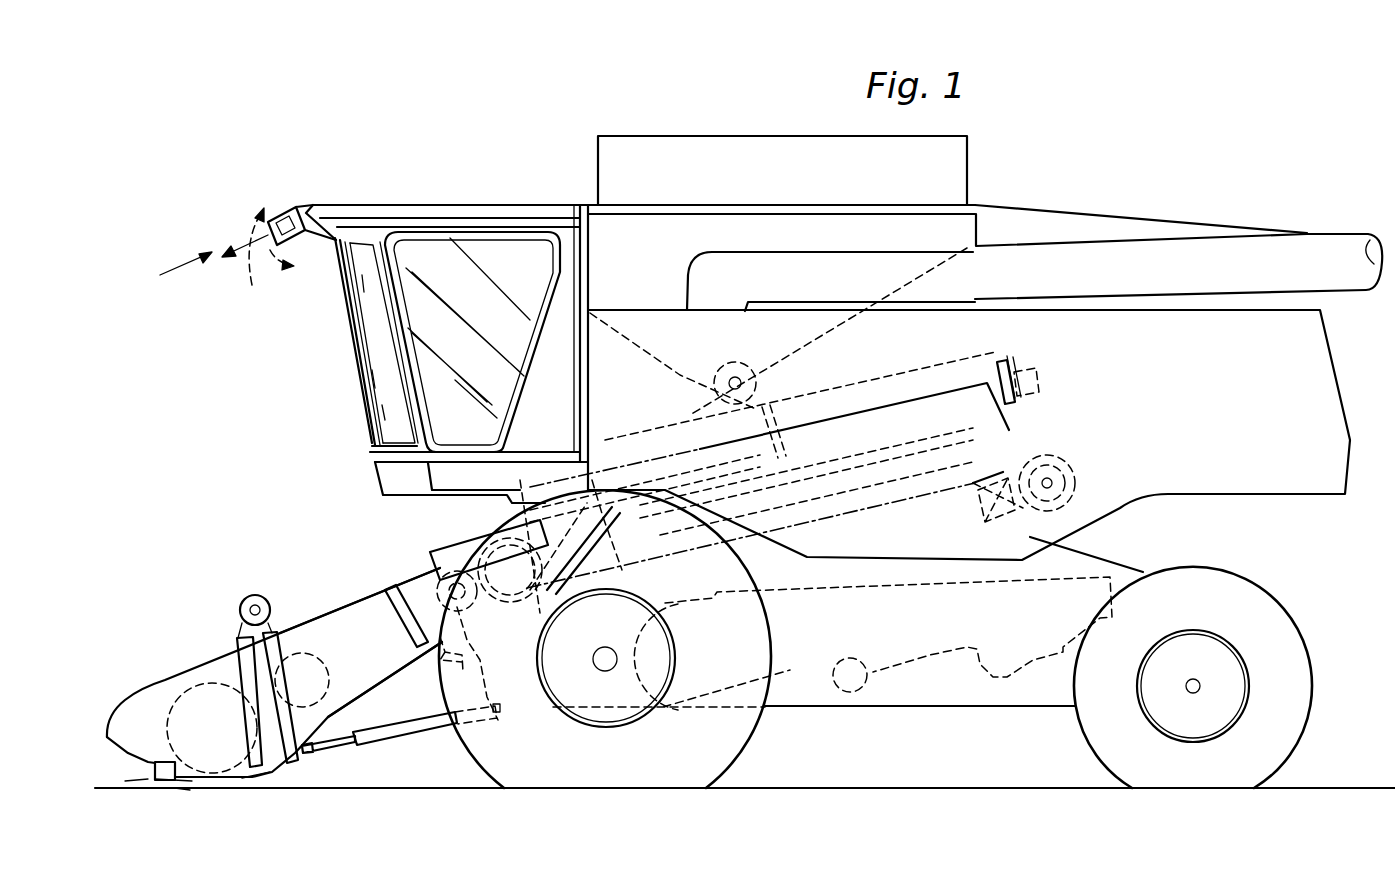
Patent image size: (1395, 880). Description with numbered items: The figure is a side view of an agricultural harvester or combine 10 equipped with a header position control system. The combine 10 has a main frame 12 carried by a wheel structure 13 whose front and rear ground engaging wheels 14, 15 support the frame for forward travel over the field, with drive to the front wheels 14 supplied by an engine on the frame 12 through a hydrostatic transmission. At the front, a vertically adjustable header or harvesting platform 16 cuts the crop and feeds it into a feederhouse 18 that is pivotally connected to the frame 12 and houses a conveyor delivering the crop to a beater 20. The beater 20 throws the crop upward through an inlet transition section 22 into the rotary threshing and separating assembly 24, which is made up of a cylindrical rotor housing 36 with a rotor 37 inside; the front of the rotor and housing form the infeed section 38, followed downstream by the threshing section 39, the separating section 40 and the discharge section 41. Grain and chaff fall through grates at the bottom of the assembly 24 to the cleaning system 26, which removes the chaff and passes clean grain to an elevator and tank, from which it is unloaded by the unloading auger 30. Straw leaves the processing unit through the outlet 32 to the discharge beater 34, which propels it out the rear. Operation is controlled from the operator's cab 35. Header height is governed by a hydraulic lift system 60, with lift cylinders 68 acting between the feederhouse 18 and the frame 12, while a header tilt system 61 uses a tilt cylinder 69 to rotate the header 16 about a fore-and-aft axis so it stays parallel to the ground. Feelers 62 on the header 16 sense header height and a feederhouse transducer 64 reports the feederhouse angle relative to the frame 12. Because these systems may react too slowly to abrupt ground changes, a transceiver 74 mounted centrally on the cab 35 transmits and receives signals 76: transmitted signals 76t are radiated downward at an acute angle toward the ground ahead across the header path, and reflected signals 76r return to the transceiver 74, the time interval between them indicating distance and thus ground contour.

The agricultural harvester or combine 10 is at (1045, 152).
The main frame 12 is at (1100, 567).
The wheel structure 13 is at (785, 742).
The front ground engaging wheel 14 is at (686, 776).
The rear ground engaging wheel 15 is at (1100, 766).
The header or harvesting platform 16 is at (163, 668).
The feederhouse 18 is at (338, 612).
The beater 20 is at (460, 547).
The inlet transition section 22 is at (520, 515).
The rotary threshing and separating assembly 24 is at (656, 440).
The cleaning system 26 is at (790, 580).
The unloading auger 30 is at (1252, 277).
The outlet 32 is at (1027, 420).
The discharge beater 34 is at (1088, 470).
The operator's cab 35 is at (455, 203).
The rotor housing 36 is at (921, 365).
The rotor 37 is at (1005, 352).
The infeed section 38 is at (558, 442).
The threshing section 39 is at (675, 398).
The separating section 40 is at (841, 378).
The discharge section 41 is at (1003, 333).
The hydraulic lift system 60 is at (392, 766).
The header tilt system 61 is at (277, 602).
The feelers 62 is at (165, 782).
The feederhouse transducer 64 is at (482, 668).
The lift cylinder 68 is at (383, 732).
The tilt cylinder 69 is at (256, 595).
The transceiver 74 is at (296, 205).
The signals 76 is at (197, 228).
The reflected signals 76r is at (182, 272).
The transmitted signals 76t is at (253, 280).